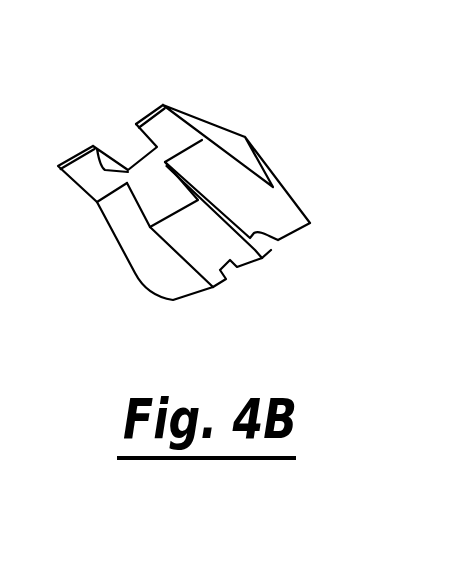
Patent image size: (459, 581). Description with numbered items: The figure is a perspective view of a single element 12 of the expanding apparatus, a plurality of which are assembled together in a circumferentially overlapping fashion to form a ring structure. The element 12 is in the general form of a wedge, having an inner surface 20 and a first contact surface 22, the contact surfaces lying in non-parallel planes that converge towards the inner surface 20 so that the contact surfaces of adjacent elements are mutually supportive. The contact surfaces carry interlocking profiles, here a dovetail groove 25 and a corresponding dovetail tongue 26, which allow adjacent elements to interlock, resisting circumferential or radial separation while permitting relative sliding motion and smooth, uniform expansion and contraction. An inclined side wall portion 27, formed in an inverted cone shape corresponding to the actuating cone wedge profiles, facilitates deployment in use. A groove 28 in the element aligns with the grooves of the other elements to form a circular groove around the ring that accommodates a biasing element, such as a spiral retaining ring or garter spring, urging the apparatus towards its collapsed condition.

The element 12 is at (183, 183).
The inner surface 20 is at (88, 188).
The first contact surface 22 is at (152, 273).
The dovetail groove 25 is at (112, 147).
The dovetail tongue 26 is at (254, 260).
The inclined side wall portion 27 is at (218, 140).
The groove 28 is at (233, 260).